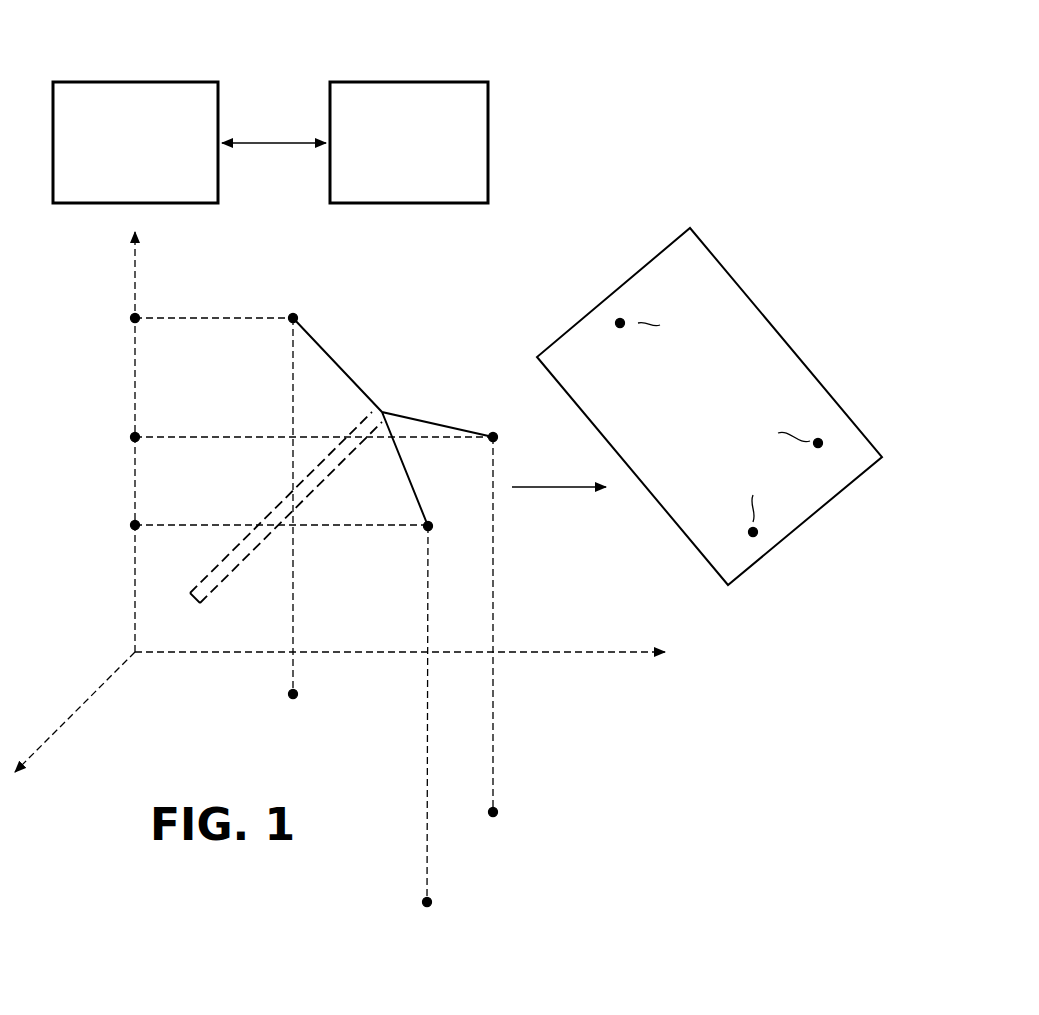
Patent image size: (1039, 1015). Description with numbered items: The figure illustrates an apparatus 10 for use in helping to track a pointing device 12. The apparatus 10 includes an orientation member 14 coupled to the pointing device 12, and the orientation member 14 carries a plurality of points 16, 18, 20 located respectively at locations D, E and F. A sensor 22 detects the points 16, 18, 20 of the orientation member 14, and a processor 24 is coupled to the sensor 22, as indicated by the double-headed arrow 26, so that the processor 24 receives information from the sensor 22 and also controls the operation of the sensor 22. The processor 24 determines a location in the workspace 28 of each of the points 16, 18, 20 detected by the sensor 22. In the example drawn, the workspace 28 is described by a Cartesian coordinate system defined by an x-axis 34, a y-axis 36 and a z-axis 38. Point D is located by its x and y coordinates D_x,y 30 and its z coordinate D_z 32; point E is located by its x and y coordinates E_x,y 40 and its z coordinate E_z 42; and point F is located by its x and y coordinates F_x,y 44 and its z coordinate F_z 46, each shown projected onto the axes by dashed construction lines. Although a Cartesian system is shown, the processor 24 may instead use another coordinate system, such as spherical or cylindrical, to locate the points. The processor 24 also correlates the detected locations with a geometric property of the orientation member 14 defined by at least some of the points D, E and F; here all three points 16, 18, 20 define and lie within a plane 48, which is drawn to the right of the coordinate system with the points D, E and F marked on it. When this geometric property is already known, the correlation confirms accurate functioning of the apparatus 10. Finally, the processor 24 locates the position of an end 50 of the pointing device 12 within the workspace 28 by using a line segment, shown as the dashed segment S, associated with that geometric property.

The apparatus 10 is at (650, 96).
The pointing device 12 is at (228, 553).
The orientation member 14 is at (390, 378).
The point 16 is at (290, 326).
The point 18 is at (425, 534).
The point 20 is at (493, 430).
The sensor 22 is at (408, 80).
The processor 24 is at (137, 80).
The double-headed arrow 26 is at (276, 140).
The workspace 28 is at (340, 502).
The x and y coordinates D_x,y 30 is at (289, 694).
The z coordinate D_z 32 is at (140, 313).
The x-axis 34 is at (586, 655).
The y-axis 36 is at (78, 707).
The z-axis 38 is at (134, 286).
The x and y coordinates E_x,y 40 is at (422, 902).
The z coordinate E_z 42 is at (140, 521).
The x and y coordinates F_x,y 44 is at (490, 818).
The z coordinate F_z 46 is at (140, 433).
The plane 48 is at (796, 350).
The end of pointing device 50 is at (190, 607).